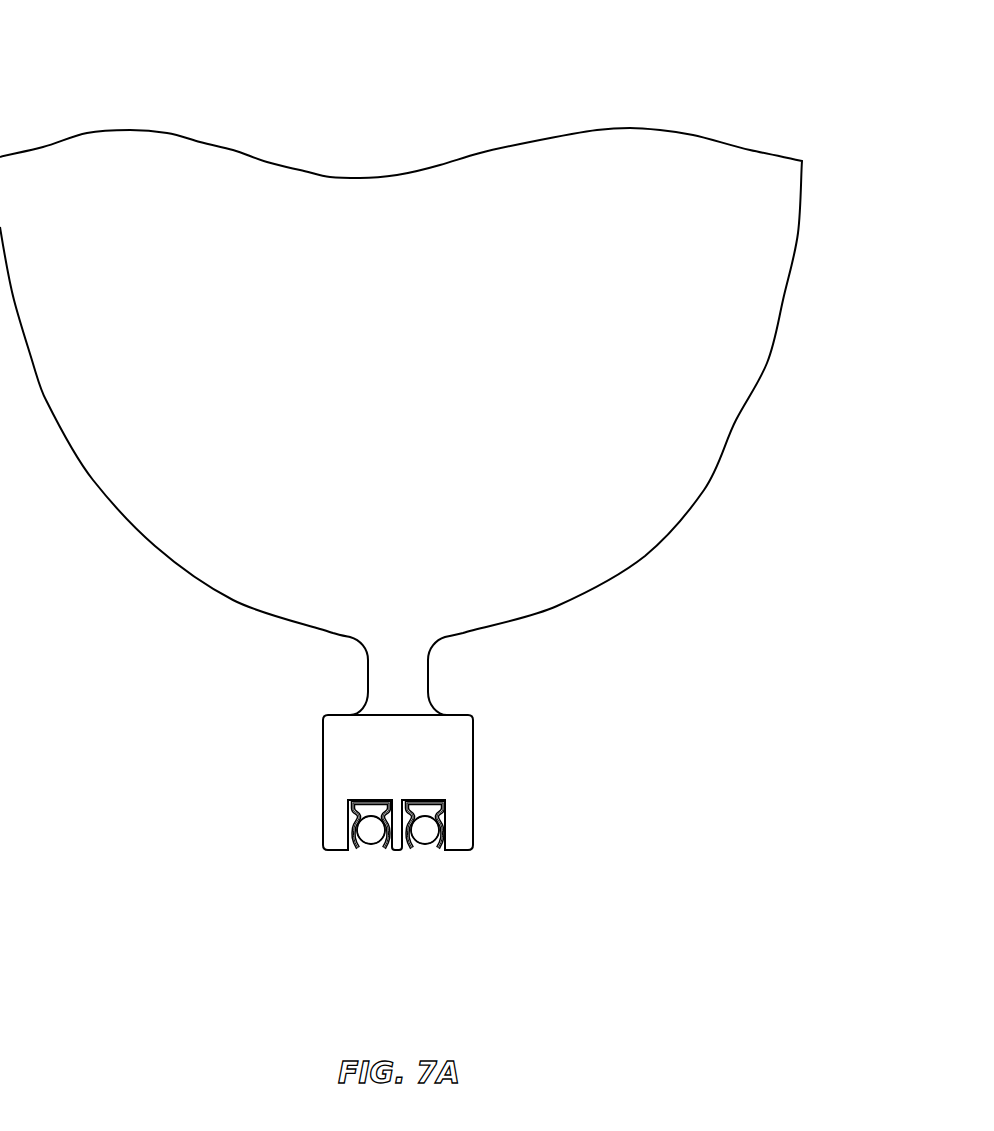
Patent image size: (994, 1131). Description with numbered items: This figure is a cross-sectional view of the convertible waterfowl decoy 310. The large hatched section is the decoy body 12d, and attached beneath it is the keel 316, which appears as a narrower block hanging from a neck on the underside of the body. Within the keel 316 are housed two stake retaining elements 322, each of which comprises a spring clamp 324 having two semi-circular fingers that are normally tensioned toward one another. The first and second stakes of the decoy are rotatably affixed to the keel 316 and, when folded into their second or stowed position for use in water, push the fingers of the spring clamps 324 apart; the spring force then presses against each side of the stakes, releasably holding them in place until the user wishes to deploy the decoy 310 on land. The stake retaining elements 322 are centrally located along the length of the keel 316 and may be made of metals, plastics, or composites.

The decoy 310 is at (187, 53).
The decoy body 12d is at (765, 362).
The keel 316 is at (450, 762).
The stake retaining element 322 is at (348, 852).
The spring clamp 324 is at (385, 850).